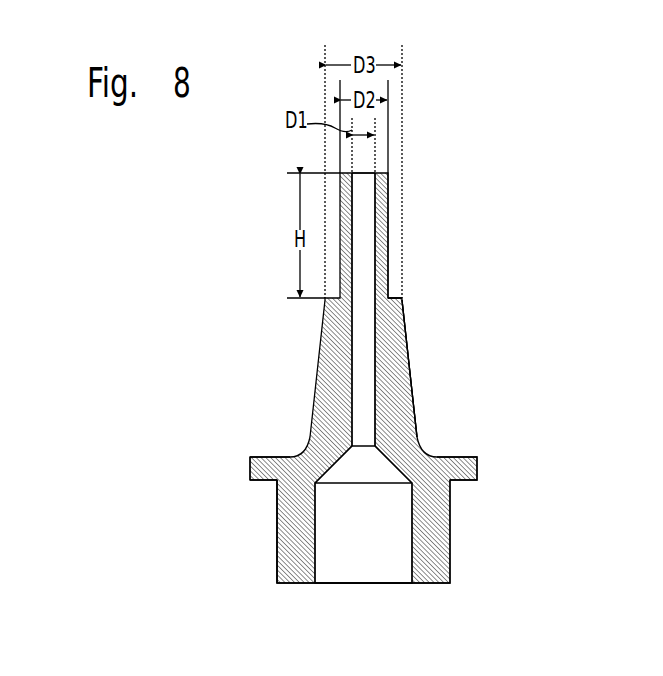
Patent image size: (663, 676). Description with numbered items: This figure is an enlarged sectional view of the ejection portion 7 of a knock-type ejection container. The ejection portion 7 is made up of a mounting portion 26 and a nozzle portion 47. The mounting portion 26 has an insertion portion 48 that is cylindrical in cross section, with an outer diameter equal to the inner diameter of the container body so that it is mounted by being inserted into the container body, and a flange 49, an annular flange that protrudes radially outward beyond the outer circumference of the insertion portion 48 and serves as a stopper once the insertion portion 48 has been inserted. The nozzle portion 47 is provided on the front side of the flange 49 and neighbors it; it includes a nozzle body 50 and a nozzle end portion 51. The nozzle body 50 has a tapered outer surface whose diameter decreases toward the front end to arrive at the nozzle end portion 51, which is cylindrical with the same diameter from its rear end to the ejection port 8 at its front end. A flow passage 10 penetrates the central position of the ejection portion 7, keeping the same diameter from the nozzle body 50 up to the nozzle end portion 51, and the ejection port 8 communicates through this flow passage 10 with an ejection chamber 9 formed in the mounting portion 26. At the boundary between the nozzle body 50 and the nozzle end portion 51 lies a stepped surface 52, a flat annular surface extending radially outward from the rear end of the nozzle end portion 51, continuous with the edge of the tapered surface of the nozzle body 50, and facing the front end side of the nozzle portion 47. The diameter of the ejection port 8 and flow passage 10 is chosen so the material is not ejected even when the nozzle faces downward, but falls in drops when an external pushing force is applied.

The ejection portion 7 is at (268, 355).
The ejection port 8 is at (365, 172).
The ejection chamber 9 is at (375, 565).
The flow passage 10 is at (360, 202).
The mounting portion 26 is at (277, 520).
The nozzle portion 47 is at (410, 339).
The insertion portion 48 is at (450, 527).
The flange 49 is at (467, 457).
The nozzle body 50 is at (410, 377).
The nozzle end portion 51 is at (389, 208).
The stepped surface 52 is at (395, 298).